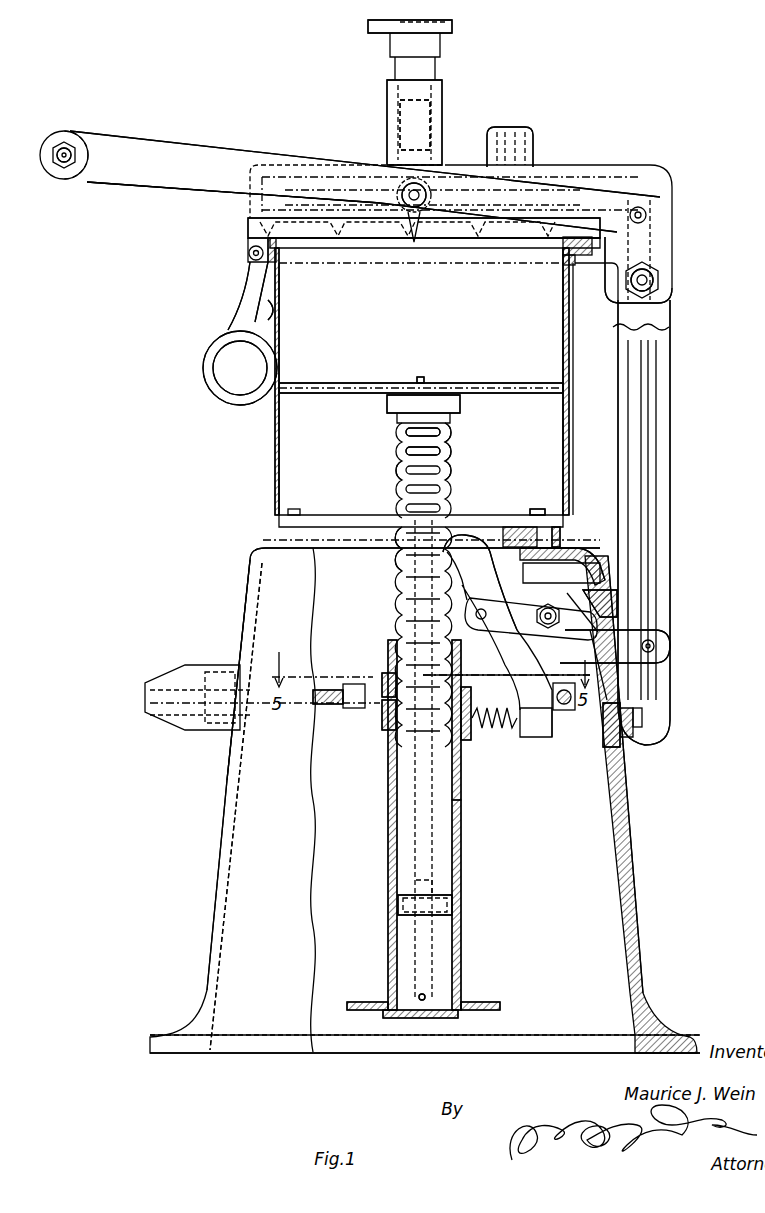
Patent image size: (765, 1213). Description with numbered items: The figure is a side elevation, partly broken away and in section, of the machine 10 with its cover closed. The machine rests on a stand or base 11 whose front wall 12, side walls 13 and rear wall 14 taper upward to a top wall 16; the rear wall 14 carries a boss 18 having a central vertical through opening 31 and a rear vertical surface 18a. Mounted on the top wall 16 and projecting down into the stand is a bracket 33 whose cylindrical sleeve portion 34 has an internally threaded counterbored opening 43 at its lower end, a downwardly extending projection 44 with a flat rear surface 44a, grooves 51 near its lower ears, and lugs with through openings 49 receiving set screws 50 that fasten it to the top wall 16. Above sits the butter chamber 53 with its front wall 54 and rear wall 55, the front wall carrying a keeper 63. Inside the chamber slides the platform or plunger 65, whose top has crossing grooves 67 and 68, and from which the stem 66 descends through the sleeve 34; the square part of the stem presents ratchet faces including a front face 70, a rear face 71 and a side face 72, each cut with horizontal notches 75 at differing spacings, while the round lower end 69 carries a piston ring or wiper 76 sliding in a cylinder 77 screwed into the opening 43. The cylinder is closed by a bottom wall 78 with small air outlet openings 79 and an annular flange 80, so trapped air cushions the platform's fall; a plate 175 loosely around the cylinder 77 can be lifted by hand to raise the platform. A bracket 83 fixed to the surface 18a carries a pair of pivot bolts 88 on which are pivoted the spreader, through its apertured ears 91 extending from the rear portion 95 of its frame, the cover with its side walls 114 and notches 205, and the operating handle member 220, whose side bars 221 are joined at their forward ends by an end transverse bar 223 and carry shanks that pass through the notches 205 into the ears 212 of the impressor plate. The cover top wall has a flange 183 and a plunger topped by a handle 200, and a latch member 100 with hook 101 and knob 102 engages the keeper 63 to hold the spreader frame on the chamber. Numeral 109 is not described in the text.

The handle 200 is at (455, 25).
The rear portion 95 is at (465, 72).
The ears 212 is at (440, 160).
The flange 183 is at (535, 132).
The end transverse bar 223 is at (85, 135).
The operating handle member 220 is at (194, 127).
The side bars 221 is at (163, 183).
The side walls 114 is at (372, 236).
The notches 205 is at (416, 222).
The pivot bolts 88 is at (652, 278).
The apertured ears 91 is at (665, 293).
The keeper 63 is at (268, 297).
The latch member 100 is at (205, 318).
The hook 101 is at (276, 318).
The handle or knob 102 is at (204, 364).
The rear wall 55 is at (563, 321).
The groove 68 is at (364, 382).
The groove 67 is at (421, 377).
The platform or plunger 65 is at (490, 371).
The front wall 54 is at (281, 427).
The butter chamber 53 is at (254, 453).
The side face 72 is at (446, 425).
The notches 75 is at (353, 1058).
The stem 66 is at (462, 457).
The rear face 71 is at (451, 484).
The front face 70 is at (385, 491).
The set screws 50 is at (538, 510).
The vertical through openings 49 is at (566, 516).
The top wall 16 is at (576, 546).
The boss 18 is at (620, 580).
The rear vertical surface 18a is at (652, 603).
The grooves 51 is at (600, 628).
The bracket 83 is at (686, 471).
The bracket 33 is at (349, 604).
The cylindrical sleeve portion 34 is at (385, 675).
The counterbored opening 43 is at (384, 720).
The section line 109 is at (485, 690).
The vertical through opening 31 is at (615, 692).
The flat rear surface 44a is at (472, 742).
The projection 44 is at (465, 740).
The machine 10 is at (655, 797).
The lower end 69 is at (433, 842).
The side walls 13 is at (548, 862).
The rear wall 14 is at (634, 851).
The stand or base 11 is at (197, 852).
The front wall 12 is at (222, 895).
The piston ring or wiper 76 is at (440, 912).
The cylinder 77 is at (462, 960).
The air outlet openings 79 is at (425, 996).
The plate 175 is at (498, 1002).
The annular flange 80 is at (460, 1014).
The bottom wall 78 is at (430, 1016).